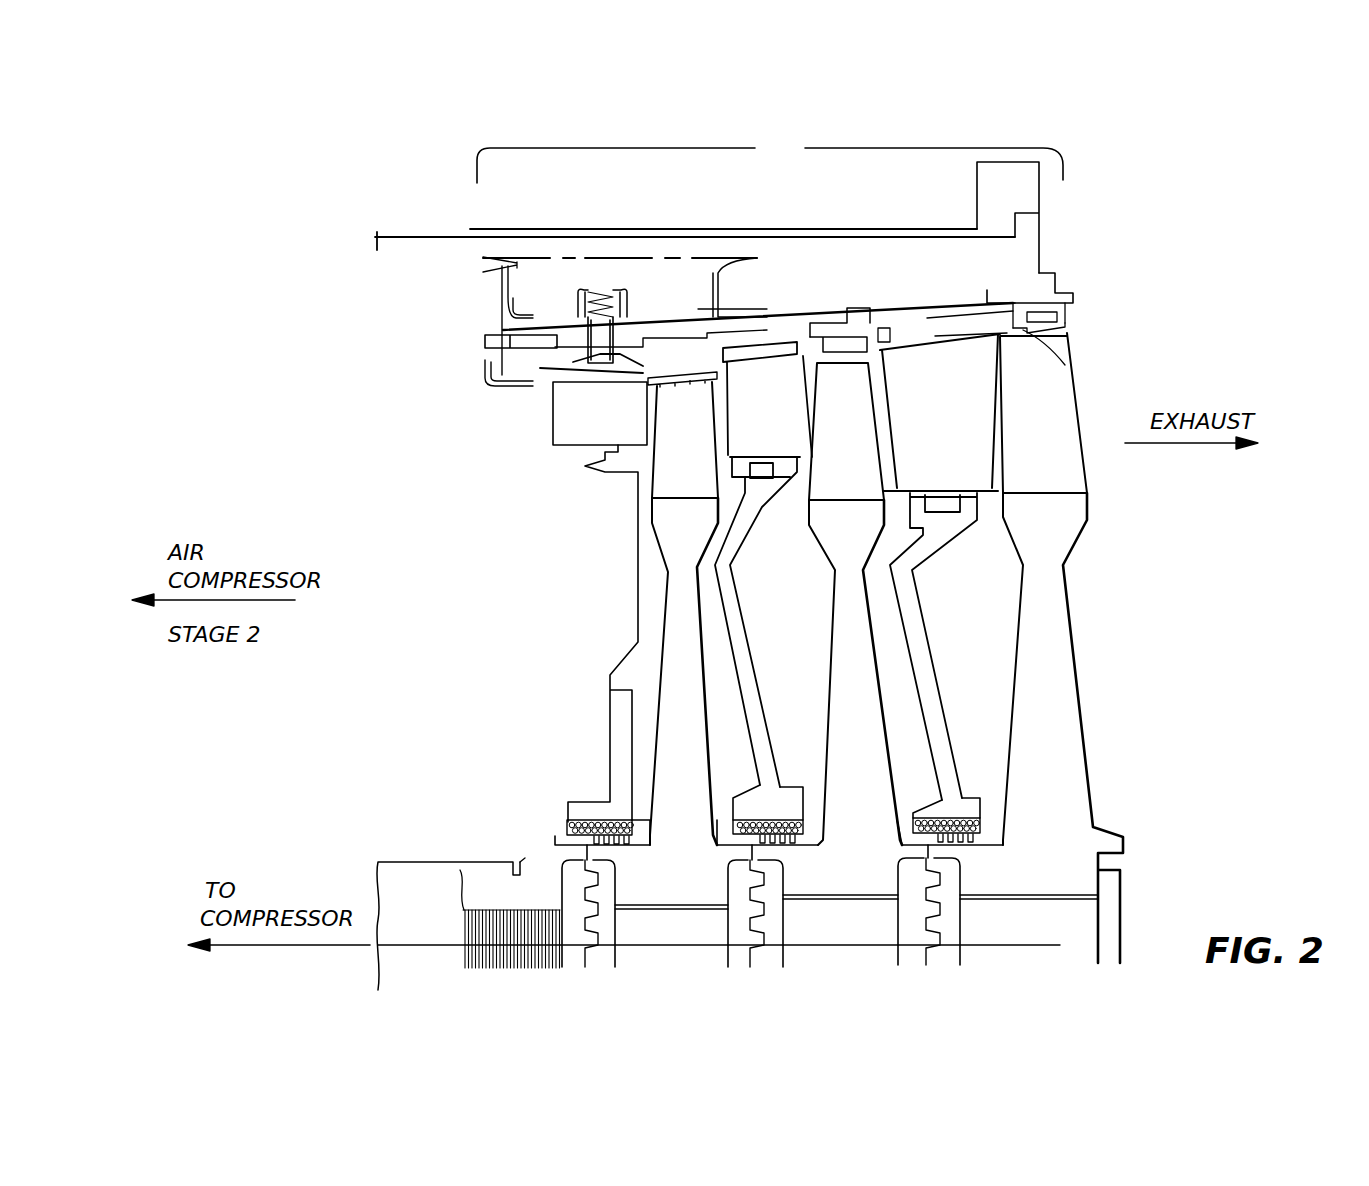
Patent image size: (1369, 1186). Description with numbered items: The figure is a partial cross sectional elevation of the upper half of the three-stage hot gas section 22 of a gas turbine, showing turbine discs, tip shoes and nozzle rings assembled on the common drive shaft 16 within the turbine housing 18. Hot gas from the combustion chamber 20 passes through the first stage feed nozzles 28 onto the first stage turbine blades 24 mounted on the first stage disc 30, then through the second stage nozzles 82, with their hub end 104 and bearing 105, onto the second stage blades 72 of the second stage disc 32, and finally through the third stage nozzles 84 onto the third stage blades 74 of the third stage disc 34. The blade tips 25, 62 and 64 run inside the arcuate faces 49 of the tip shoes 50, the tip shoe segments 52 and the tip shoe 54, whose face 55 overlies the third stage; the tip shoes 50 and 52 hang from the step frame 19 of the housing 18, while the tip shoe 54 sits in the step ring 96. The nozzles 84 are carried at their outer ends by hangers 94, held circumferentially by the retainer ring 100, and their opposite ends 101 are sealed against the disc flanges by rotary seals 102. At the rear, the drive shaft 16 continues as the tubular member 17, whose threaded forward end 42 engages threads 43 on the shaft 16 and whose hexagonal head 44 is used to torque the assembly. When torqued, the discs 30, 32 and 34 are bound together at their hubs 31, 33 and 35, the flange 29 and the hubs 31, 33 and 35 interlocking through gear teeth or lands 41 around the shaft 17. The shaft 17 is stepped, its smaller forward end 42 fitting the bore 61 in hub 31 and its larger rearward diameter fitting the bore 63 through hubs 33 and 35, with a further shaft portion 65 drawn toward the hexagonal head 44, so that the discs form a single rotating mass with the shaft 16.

The common drive shaft 16 is at (428, 915).
The tubular member 17 is at (666, 937).
The turbine housing 18 is at (720, 231).
The step frame 19 is at (767, 343).
The combustion chamber 20 is at (450, 603).
The hot gas section 22 is at (770, 158).
The first stage turbine blades 24 is at (699, 485).
The blade tips 25 is at (684, 385).
The first stage feed nozzles 28 is at (606, 415).
The flange 29 is at (557, 880).
The first stage disc 30 is at (701, 767).
The hub 31 is at (712, 879).
The second stage disc 32 is at (872, 728).
The hub 33 is at (898, 877).
The third stage disc 34 is at (1064, 735).
The hub 35 is at (960, 880).
The interlocking gear teeth or lands 41 is at (560, 845).
The threaded forward end 42 is at (503, 966).
The threads 43 is at (460, 870).
The hexagonal head 44 is at (1125, 917).
The arcuate faces 49 is at (707, 370).
The tip shoes 50 is at (690, 360).
The tip shoe segments 52 is at (847, 337).
The tip shoe 54 is at (1070, 312).
The face 55 is at (1068, 345).
The bore 61 is at (685, 912).
The blade tips 62 is at (836, 364).
The bore 63 is at (849, 900).
The blade tips 64 is at (1068, 376).
The third shaft section 65 is at (1027, 900).
The second stage blades 72 is at (862, 485).
The third stage blades 74 is at (1054, 470).
The second stage nozzles 82 is at (784, 426).
The third stage nozzles 84 is at (960, 435).
The hangers 94 is at (958, 313).
The step ring 96 is at (1017, 303).
The retainer ring 100 is at (888, 327).
The opposite ends 101 is at (967, 817).
The rotary seals 102 is at (980, 826).
The hub end 104 is at (780, 812).
The bearing 105 is at (805, 826).